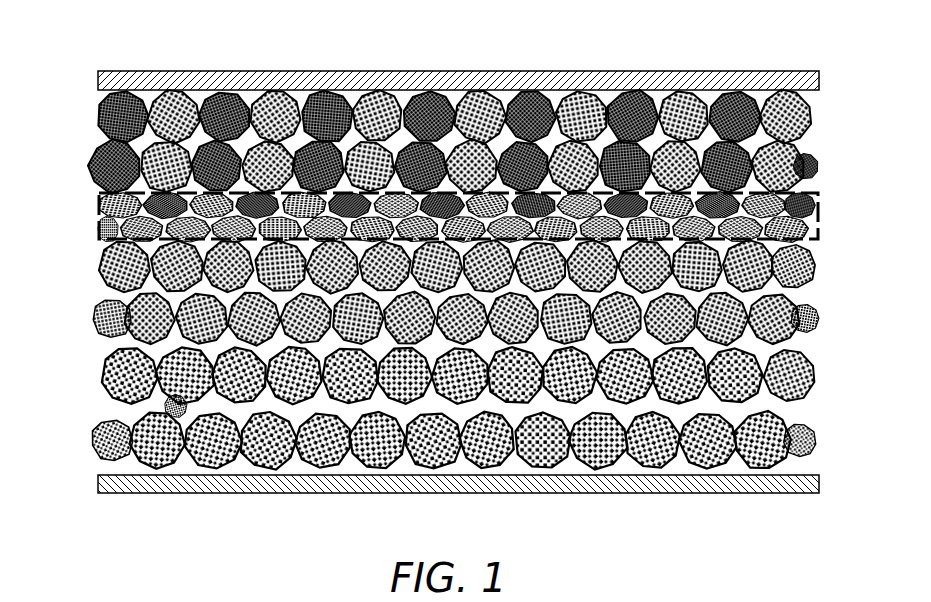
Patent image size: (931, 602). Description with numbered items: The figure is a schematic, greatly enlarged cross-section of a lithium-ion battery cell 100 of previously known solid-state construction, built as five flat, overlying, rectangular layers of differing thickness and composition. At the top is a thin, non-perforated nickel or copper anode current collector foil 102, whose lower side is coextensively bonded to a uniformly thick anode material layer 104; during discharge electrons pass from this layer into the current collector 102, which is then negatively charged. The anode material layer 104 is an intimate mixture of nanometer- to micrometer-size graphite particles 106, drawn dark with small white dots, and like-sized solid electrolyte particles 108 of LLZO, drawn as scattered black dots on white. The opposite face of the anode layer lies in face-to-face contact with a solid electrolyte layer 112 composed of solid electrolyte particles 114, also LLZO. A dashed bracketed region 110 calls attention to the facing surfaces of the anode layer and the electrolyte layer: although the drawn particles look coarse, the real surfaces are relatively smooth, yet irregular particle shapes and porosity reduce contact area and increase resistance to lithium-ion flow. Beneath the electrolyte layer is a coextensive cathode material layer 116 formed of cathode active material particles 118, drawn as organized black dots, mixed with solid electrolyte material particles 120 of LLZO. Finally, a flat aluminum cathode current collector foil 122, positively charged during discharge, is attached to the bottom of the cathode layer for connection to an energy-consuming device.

The lithium-ion battery cell 100 is at (744, 56).
The anode current collector foil 102 is at (395, 71).
The anode material layer 104 is at (826, 92).
The graphite particles 106 is at (112, 153).
The solid electrolyte particles 108 is at (170, 152).
The bracketed region 110 is at (820, 216).
The solid electrolyte layer 112 is at (826, 222).
The solid electrolyte particles 114 is at (110, 320).
The cathode material layer 116 is at (826, 350).
The cathode active material particles 118 is at (115, 402).
The solid electrolyte material particles 120 is at (112, 458).
The cathode current collector foil 122 is at (342, 494).